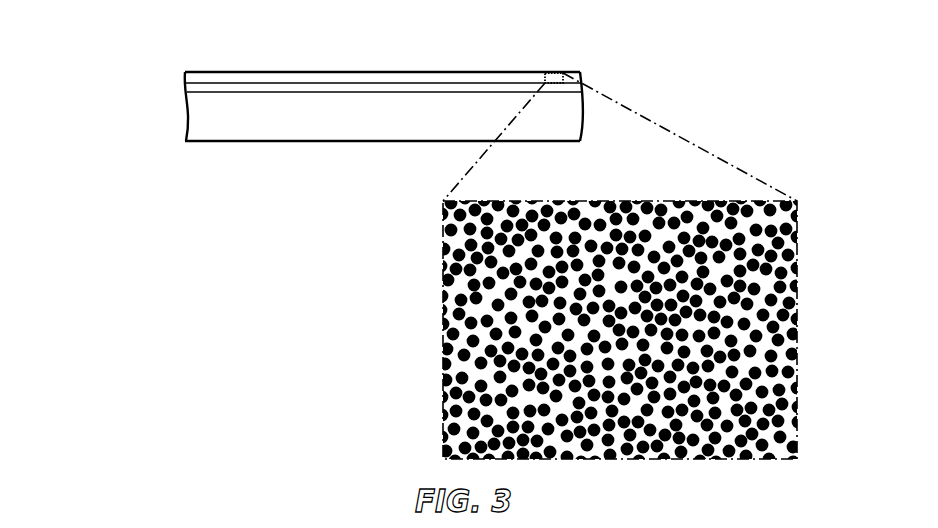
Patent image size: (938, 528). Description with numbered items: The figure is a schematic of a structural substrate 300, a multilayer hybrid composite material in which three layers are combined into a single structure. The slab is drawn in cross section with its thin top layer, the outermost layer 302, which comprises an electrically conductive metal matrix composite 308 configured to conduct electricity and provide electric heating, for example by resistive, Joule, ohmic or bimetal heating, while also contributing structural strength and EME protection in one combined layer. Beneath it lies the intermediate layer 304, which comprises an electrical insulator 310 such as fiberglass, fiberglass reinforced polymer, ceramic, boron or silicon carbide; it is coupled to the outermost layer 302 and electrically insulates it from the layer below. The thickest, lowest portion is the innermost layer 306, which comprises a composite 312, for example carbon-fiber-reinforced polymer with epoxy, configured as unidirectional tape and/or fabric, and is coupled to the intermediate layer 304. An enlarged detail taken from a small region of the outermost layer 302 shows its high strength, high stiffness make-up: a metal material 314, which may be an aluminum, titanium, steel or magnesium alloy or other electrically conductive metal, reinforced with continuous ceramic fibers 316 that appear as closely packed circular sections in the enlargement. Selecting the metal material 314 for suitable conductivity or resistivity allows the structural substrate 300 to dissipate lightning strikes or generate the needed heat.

The structural substrate 300 is at (430, 109).
The outermost layer 302 is at (419, 66).
The electrically conductive metal matrix composite 308 is at (383, 41).
The intermediate layer 304 is at (180, 89).
The electrical insulator 310 is at (304, 70).
The innermost layer 306 is at (253, 152).
The composite 312 is at (383, 145).
The metal material 314 is at (483, 243).
The continuous ceramic fibers 316 is at (614, 201).